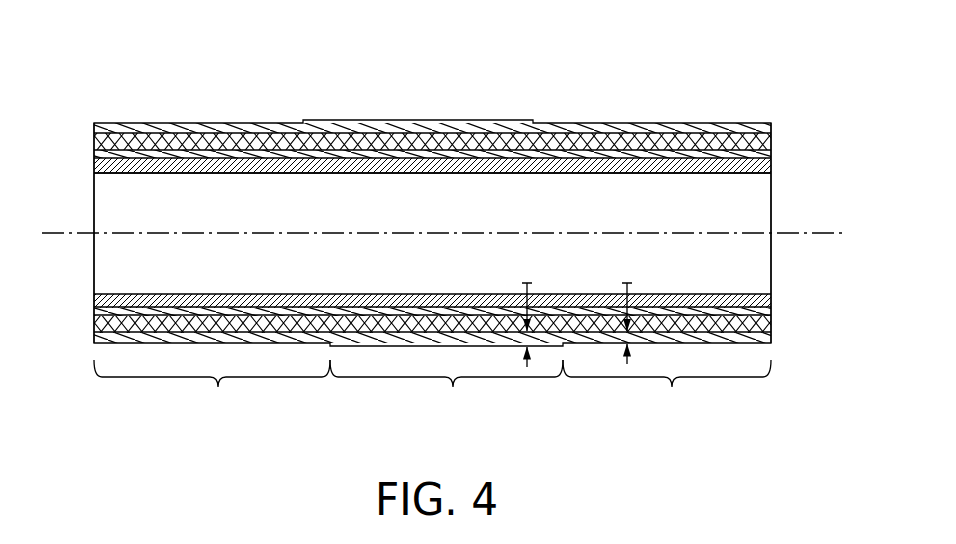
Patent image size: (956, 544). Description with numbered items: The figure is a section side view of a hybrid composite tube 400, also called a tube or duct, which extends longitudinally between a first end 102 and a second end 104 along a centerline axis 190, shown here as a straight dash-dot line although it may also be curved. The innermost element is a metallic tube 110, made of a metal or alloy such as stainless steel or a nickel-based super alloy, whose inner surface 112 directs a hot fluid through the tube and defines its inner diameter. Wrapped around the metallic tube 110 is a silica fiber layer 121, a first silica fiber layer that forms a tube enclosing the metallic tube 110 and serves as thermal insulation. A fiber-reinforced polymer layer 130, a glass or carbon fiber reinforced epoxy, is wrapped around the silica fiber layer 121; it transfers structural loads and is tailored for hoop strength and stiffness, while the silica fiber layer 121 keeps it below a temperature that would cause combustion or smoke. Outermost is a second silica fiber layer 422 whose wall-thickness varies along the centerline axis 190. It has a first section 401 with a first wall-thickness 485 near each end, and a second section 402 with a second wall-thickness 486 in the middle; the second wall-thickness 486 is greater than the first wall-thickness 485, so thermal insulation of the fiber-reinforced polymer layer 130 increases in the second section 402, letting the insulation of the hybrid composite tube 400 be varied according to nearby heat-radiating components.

The hybrid composite tube 400 is at (737, 97).
The first end 102 is at (74, 181).
The second end 104 is at (793, 178).
The centerline axis 190 is at (53, 234).
The silica fiber layer 121 is at (453, 155).
The silica fiber layer 422 is at (491, 123).
The fiber-reinforced polymer (FRP) layer 130 is at (558, 150).
The metallic tube 110 is at (582, 162).
The inner surface 112 is at (697, 174).
The second wall-thickness 486 is at (527, 283).
The first wall-thickness 485 is at (627, 283).
The first section 401 is at (432, 391).
The second section 402 is at (446, 390).